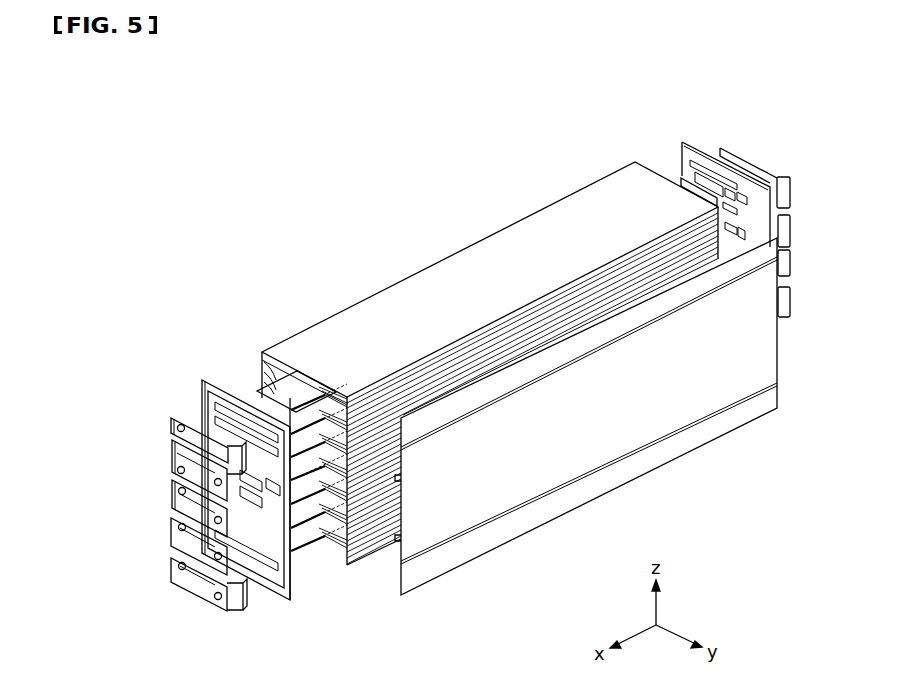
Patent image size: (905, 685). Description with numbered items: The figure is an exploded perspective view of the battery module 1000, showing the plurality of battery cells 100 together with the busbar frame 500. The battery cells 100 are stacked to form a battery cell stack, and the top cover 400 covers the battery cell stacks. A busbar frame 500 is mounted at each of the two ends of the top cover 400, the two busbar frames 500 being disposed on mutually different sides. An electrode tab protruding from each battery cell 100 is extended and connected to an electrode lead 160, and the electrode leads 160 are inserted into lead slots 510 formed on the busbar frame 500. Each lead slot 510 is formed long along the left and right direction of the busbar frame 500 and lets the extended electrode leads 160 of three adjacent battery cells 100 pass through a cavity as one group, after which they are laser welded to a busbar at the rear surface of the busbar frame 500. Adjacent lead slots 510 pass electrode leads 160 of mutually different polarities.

The battery cell 100 is at (363, 556).
The electrode lead 160 is at (285, 398).
The top cover 400 is at (633, 420).
The busbar frame 500 is at (219, 368).
The lead slot 510 is at (208, 553).
The battery module 1000 is at (403, 255).